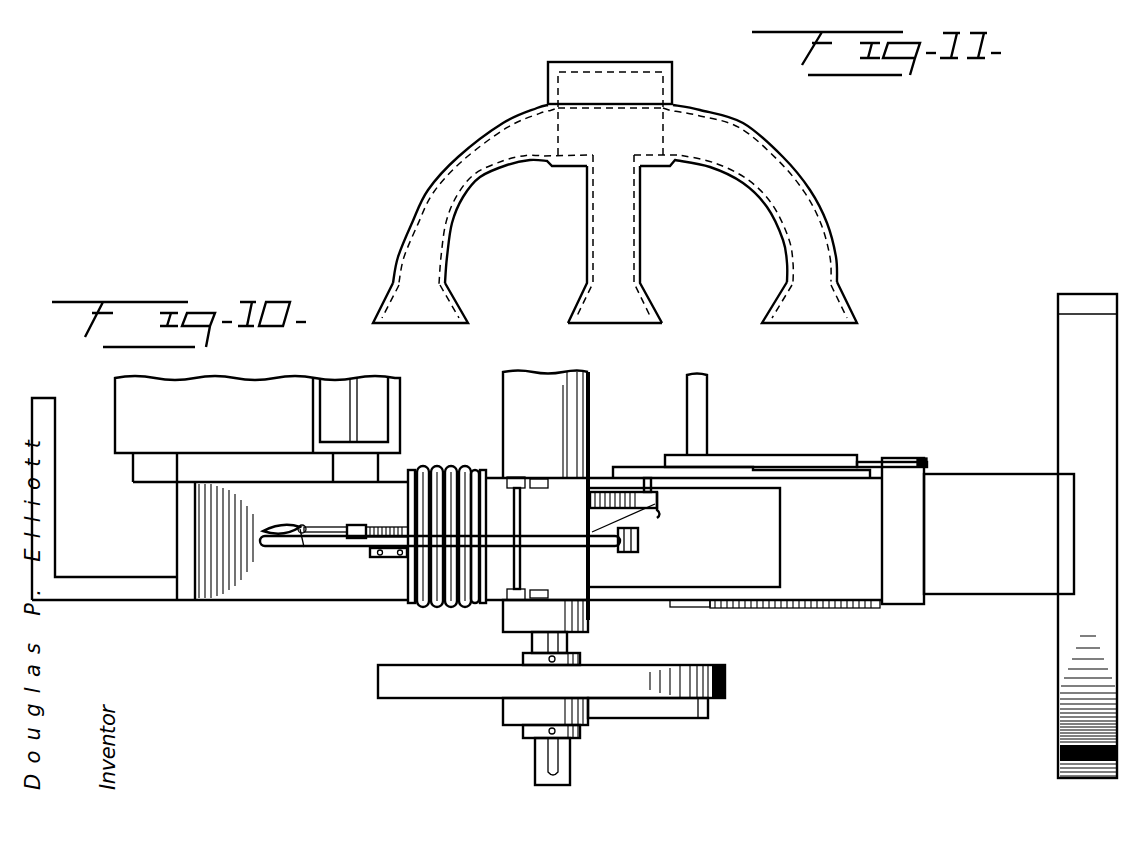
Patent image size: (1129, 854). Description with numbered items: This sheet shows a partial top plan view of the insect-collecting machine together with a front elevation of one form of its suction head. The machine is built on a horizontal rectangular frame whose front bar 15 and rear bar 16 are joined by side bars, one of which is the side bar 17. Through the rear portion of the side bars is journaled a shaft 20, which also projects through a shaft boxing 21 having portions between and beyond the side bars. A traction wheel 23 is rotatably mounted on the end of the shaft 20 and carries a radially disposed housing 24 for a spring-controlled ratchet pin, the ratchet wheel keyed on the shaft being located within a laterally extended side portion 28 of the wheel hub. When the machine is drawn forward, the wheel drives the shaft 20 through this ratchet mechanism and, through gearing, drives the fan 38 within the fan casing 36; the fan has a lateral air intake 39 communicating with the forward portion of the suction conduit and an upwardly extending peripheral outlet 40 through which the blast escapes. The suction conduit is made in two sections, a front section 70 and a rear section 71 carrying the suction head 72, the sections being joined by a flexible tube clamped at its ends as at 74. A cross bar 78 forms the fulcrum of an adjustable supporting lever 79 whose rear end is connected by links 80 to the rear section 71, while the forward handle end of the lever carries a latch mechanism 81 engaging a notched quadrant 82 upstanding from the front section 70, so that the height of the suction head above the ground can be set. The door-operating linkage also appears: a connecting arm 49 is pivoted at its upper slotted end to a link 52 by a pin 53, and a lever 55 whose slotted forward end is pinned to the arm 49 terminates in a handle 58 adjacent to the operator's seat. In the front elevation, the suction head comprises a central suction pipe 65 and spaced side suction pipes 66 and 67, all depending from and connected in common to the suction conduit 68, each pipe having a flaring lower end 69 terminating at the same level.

In FIG. 10, the front bar 15 is at (52, 557).
In FIG. 10, the rear bar 16 is at (700, 437).
In FIG. 10, the side bar 17 is at (157, 587).
In FIG. 10, the shaft 20 is at (538, 759).
In FIG. 10, the shaft boxing 21 is at (590, 424).
In FIG. 10, the wheel 23 is at (688, 672).
In FIG. 10, the housing 24 is at (684, 705).
In FIG. 10, the laterally extended side portion of the wheel hub 28 is at (571, 742).
In FIG. 10, the fan casing 36 is at (261, 429).
In FIG. 10, the fan 38 is at (358, 386).
In FIG. 10, the lateral air intake 39 is at (222, 467).
In FIG. 10, the peripheral outlet 40 is at (403, 402).
In FIG. 10, the connecting arm 49 is at (628, 468).
In FIG. 10, the link 52 is at (643, 513).
In FIG. 10, the pin 53 is at (654, 484).
In FIG. 10, the lever 55 is at (820, 455).
In FIG. 10, the handle 58 is at (897, 456).
In FIG. 11, the central suction pipe 65 is at (625, 261).
In FIG. 11, the side suction pipe 66 is at (437, 247).
In FIG. 11, the side suction pipe 67 is at (813, 260).
In FIG. 11, the suction conduit 68 is at (668, 98).
In FIG. 11, the flaring lower end 69 is at (441, 325).
In FIG. 10, the front section 70 is at (440, 560).
In FIG. 10, the rear section 71 is at (831, 541).
In FIG. 10, the suction head 72 is at (1087, 536).
In FIG. 10, the clamp 74 is at (452, 468).
In FIG. 10, the cross bar 78 is at (530, 570).
In FIG. 10, the adjustable supporting lever 79 is at (413, 553).
In FIG. 10, the links 80 is at (637, 551).
In FIG. 10, the latch mechanism 81 is at (288, 527).
In FIG. 10, the notched quadrant 82 is at (383, 530).